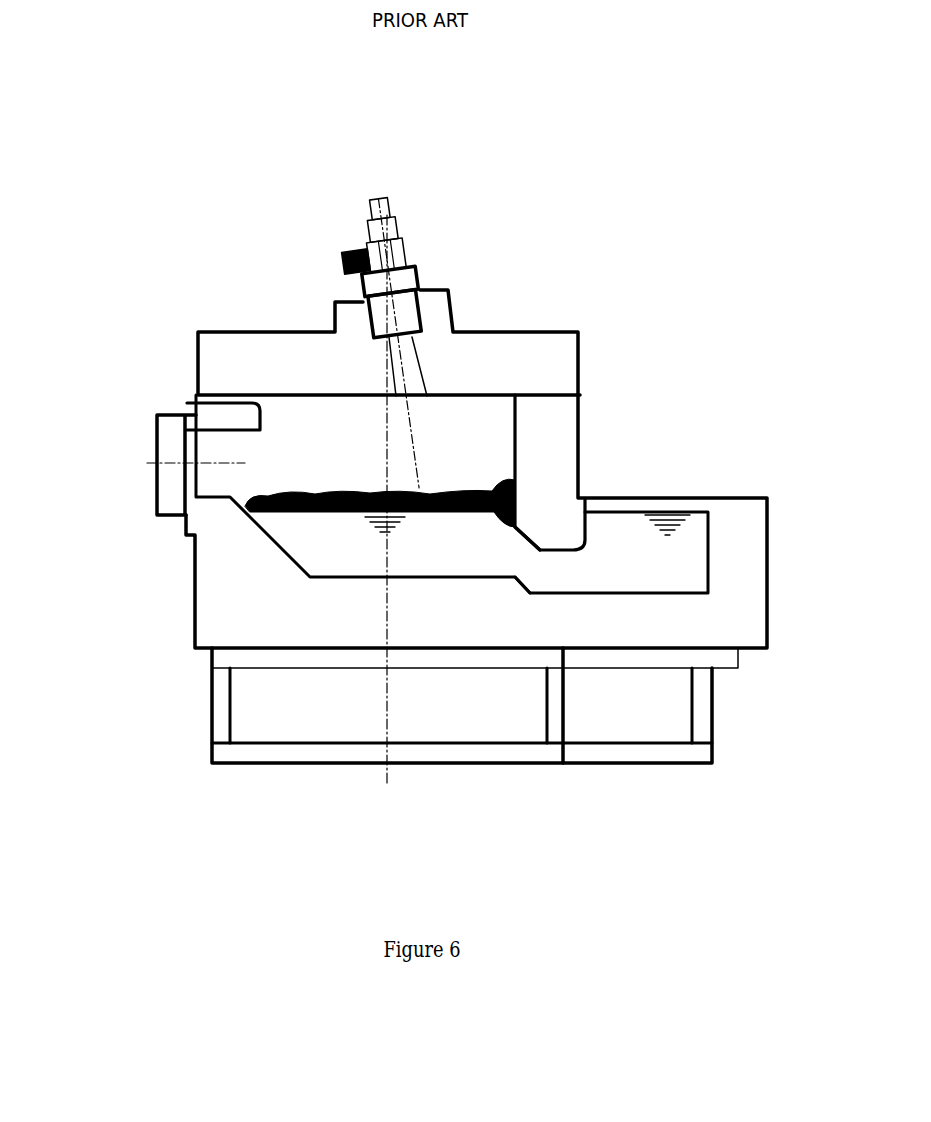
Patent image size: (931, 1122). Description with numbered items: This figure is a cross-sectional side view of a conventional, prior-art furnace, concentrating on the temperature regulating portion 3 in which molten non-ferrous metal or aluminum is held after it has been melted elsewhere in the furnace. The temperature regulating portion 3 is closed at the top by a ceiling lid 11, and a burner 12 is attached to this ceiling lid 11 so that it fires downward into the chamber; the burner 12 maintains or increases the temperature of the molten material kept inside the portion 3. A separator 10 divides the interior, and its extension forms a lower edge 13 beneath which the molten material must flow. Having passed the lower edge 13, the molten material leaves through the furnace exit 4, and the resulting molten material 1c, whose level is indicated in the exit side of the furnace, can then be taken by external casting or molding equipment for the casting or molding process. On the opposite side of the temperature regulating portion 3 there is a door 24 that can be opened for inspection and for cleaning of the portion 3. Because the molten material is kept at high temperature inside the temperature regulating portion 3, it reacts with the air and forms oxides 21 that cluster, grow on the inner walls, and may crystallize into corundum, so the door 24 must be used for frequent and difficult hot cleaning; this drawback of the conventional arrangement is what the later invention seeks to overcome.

The resulting molten material 1c is at (658, 505).
The temperature regulating portion 3 is at (302, 470).
The furnace exit 4 is at (608, 533).
The separator 10 is at (523, 527).
The ceiling lid 11 is at (480, 353).
The burner 12 is at (403, 242).
The lower edge 13 is at (550, 547).
The partition wall 21 is at (490, 473).
The door 24 is at (170, 432).